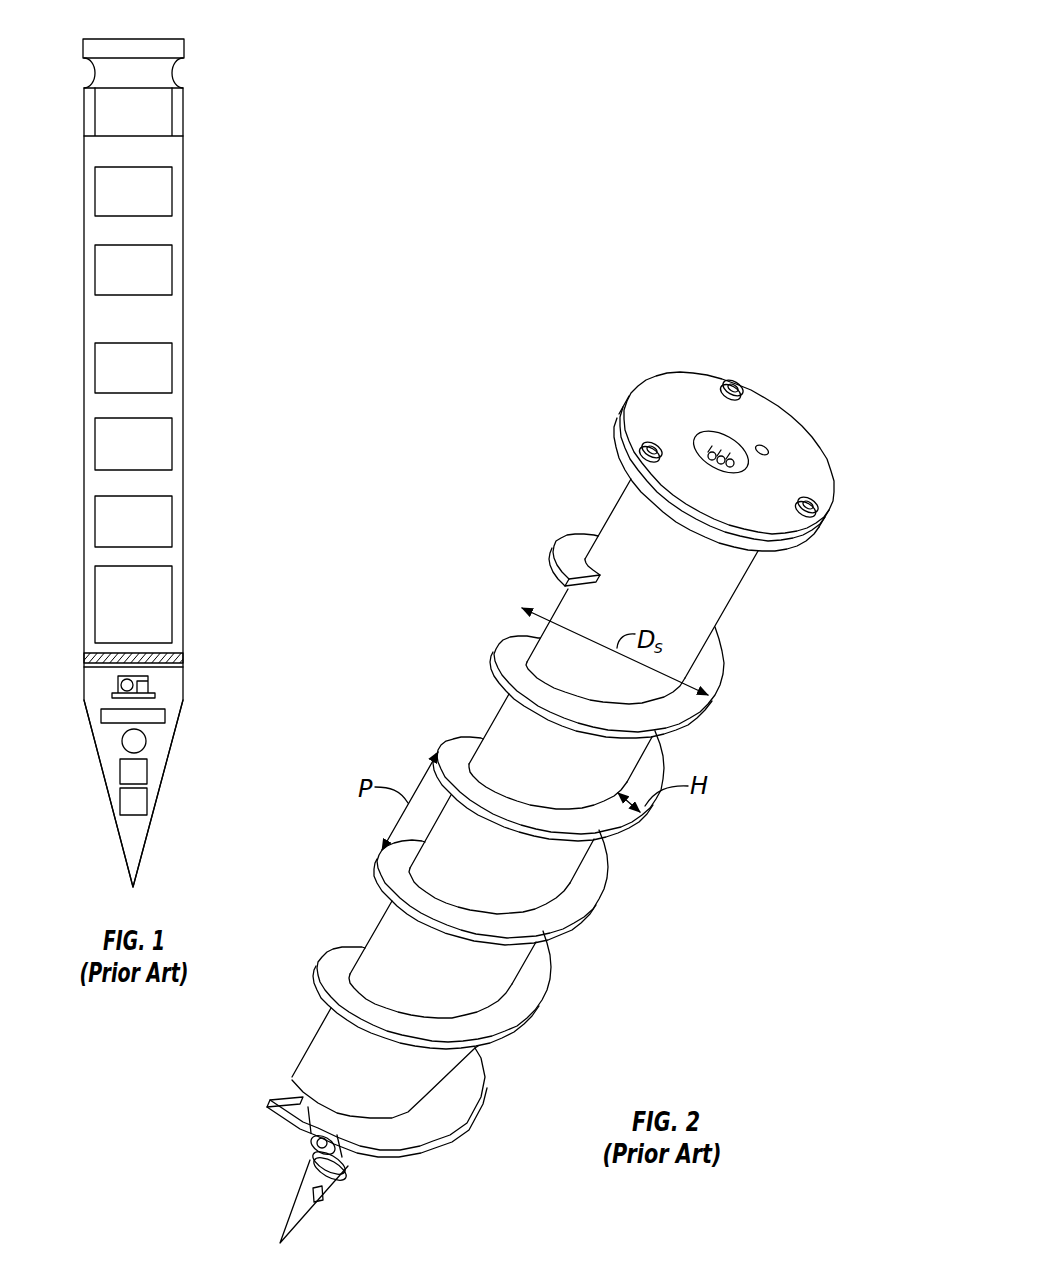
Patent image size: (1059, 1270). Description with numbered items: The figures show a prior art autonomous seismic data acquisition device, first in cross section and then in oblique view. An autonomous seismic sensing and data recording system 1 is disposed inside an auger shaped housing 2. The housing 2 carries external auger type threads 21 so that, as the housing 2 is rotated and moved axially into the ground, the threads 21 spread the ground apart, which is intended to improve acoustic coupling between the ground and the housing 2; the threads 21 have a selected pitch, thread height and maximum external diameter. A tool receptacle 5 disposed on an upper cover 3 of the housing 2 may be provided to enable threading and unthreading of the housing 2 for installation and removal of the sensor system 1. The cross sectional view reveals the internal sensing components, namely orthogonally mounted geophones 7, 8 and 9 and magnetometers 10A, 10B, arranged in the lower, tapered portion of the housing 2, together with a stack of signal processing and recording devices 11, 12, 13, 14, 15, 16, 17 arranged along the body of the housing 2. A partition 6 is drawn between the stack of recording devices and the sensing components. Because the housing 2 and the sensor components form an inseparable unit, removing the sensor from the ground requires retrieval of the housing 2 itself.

In FIG. 1, the autonomous seismic sensing and data recording system 1 is at (82, 350).
In FIG. 2, the autonomous seismic sensing and data recording system 1 is at (612, 748).
In FIG. 1, the auger shaped housing 2 is at (165, 775).
In FIG. 2, the auger shaped housing 2 is at (300, 1207).
In FIG. 1, the upper cover 3 is at (82, 70).
In FIG. 2, the upper cover 3 is at (768, 550).
In FIG. 1, the tool receptacle 5 is at (168, 47).
In FIG. 1, the partition 6 is at (174, 660).
In FIG. 1, the geophone 7 is at (148, 800).
In FIG. 1, the geophone 8 is at (119, 772).
In FIG. 1, the geophone 9 is at (121, 742).
In FIG. 1, the magnetometer 10A is at (150, 686).
In FIG. 1, the magnetometer 10B is at (163, 716).
In FIG. 1, the signal processing/recording device 11 is at (163, 604).
In FIG. 1, the signal processing/recording device 12 is at (163, 521).
In FIG. 1, the compartment 13 is at (163, 445).
In FIG. 1, the signal processing/recording device 14 is at (163, 368).
In FIG. 1, the signal processing/recording device 15 is at (163, 271).
In FIG. 1, the signal processing/recording device 16 is at (163, 192).
In FIG. 1, the signal processing/recording device 17 is at (163, 112).
In FIG. 2, the external threads 21 is at (575, 905).